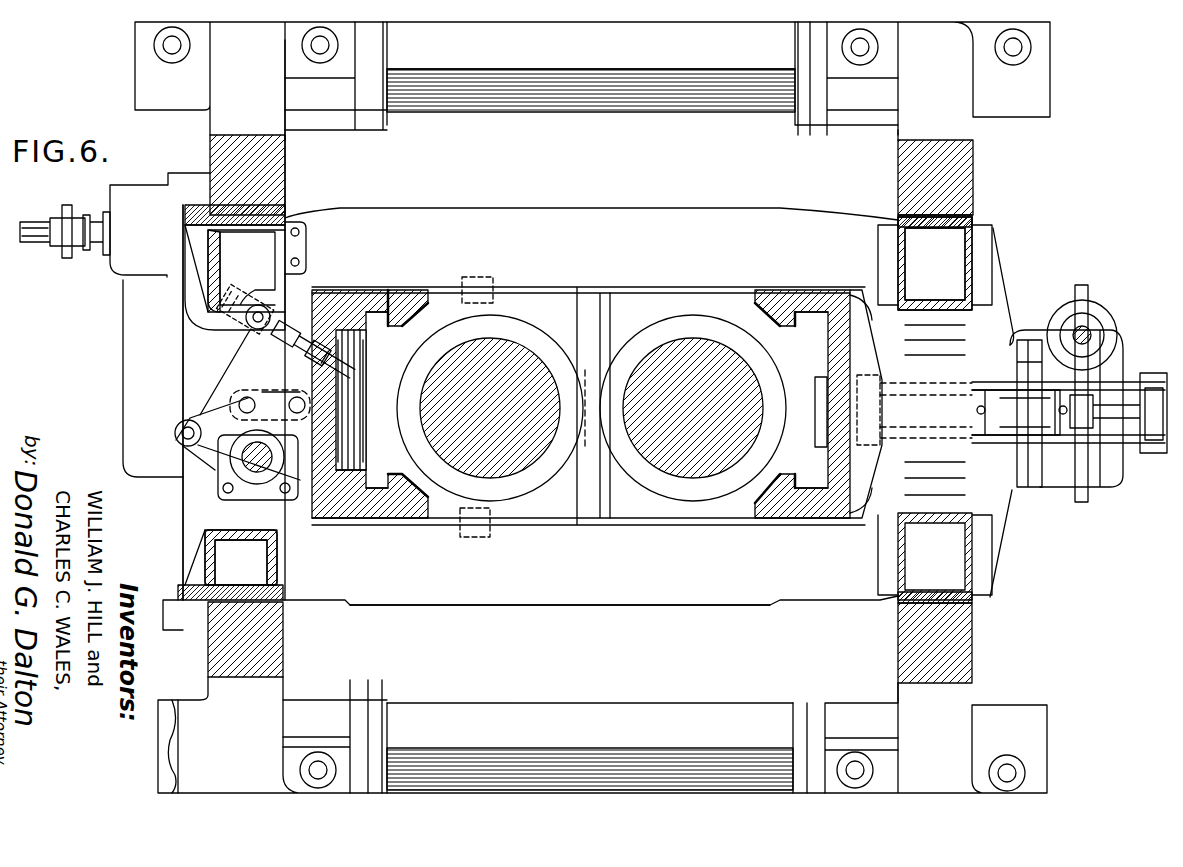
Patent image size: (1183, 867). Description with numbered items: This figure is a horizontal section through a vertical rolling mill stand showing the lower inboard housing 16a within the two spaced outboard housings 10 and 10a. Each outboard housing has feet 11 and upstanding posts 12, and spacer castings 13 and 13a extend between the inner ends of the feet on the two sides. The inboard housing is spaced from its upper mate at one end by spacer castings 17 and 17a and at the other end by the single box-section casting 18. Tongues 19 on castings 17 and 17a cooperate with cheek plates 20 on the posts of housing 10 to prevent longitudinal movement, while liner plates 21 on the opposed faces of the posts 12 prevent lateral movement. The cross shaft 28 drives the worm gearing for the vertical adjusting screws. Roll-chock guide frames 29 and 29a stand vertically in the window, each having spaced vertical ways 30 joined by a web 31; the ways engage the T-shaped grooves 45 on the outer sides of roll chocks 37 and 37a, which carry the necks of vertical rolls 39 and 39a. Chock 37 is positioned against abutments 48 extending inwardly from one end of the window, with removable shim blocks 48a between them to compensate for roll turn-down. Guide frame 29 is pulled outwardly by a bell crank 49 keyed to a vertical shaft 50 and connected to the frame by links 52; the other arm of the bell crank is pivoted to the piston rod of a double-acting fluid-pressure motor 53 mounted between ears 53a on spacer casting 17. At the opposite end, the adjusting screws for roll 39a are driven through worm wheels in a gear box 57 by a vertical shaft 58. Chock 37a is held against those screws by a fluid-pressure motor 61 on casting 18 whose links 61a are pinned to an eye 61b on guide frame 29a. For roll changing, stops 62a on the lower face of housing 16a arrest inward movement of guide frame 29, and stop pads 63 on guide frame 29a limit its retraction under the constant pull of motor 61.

The outboard housing 10 is at (203, 156).
The outboard housing 10a is at (889, 172).
The feet 11 is at (135, 57).
The upstanding posts 12 is at (240, 150).
The spacer casting 13 is at (615, 100).
The spacer casting 13a is at (625, 705).
The inboard housing 16a is at (643, 605).
The spacer casting 17 is at (240, 256).
The spacer casting 17a is at (278, 555).
The box-section casting 18 is at (925, 522).
The tongues 19 is at (186, 228).
The cheek plates 20 is at (168, 210).
The liner plates 21 is at (288, 215).
The cross shaft 28 is at (98, 245).
The roll-chock guide frame 29 is at (380, 300).
The roll-chock guide frame 29a is at (802, 300).
The vertical ways 30 is at (416, 300).
The web 31 is at (346, 372).
The roll chock 37 is at (530, 305).
The roll chock 37a is at (640, 300).
The vertical roll 39 is at (530, 455).
The vertical roll 39a is at (680, 460).
The T-shaped grooves 45 is at (402, 328).
The abutments 48 is at (338, 352).
The shim blocks 48a is at (358, 450).
The bell crank 49 is at (190, 448).
The vertical shaft 50 is at (250, 462).
The links 52 is at (266, 392).
The fluid-pressure motor 53 is at (218, 345).
The ears 53a is at (290, 290).
The gear box 57 is at (1105, 487).
The vertical shaft 58 is at (1092, 335).
The fluid-pressure motor 61 is at (1020, 413).
The links 61a is at (990, 385).
The eye 61b is at (868, 413).
The stops 62a is at (478, 275).
The stop pads 63 is at (848, 300).